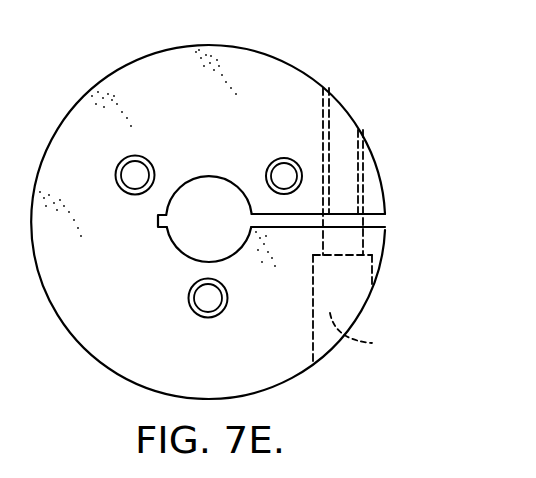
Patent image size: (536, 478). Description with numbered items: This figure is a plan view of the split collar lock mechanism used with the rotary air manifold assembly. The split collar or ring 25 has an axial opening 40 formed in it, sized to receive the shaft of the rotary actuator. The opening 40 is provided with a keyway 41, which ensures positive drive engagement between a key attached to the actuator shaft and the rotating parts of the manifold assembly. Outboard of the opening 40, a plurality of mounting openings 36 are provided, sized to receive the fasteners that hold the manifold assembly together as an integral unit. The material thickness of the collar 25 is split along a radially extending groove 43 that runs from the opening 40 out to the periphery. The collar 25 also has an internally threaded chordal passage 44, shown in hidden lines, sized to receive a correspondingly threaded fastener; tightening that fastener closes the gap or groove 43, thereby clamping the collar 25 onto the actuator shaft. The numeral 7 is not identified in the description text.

The split collar 25 is at (225, 44).
The plate body 7 is at (139, 357).
The mounting openings 36 is at (303, 172).
The axial opening 40 is at (196, 209).
The keyway 41 is at (163, 228).
The radially extending groove 43 is at (371, 220).
The chordal passage 44 is at (356, 225).